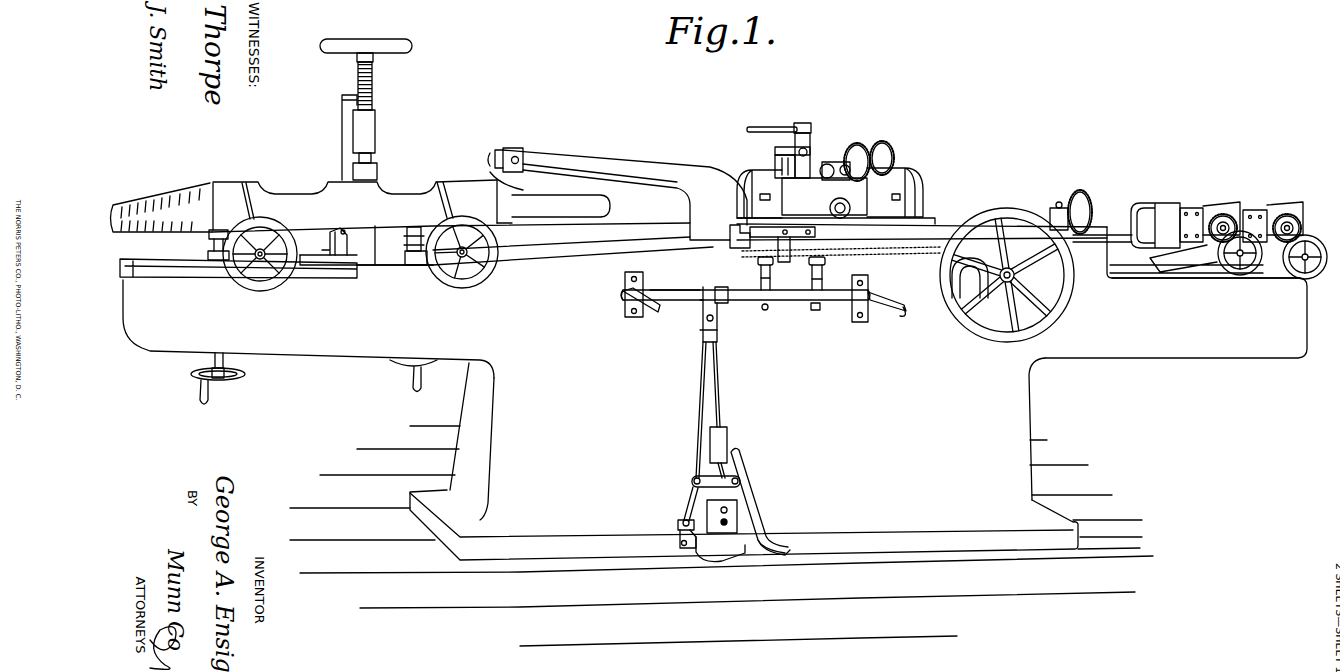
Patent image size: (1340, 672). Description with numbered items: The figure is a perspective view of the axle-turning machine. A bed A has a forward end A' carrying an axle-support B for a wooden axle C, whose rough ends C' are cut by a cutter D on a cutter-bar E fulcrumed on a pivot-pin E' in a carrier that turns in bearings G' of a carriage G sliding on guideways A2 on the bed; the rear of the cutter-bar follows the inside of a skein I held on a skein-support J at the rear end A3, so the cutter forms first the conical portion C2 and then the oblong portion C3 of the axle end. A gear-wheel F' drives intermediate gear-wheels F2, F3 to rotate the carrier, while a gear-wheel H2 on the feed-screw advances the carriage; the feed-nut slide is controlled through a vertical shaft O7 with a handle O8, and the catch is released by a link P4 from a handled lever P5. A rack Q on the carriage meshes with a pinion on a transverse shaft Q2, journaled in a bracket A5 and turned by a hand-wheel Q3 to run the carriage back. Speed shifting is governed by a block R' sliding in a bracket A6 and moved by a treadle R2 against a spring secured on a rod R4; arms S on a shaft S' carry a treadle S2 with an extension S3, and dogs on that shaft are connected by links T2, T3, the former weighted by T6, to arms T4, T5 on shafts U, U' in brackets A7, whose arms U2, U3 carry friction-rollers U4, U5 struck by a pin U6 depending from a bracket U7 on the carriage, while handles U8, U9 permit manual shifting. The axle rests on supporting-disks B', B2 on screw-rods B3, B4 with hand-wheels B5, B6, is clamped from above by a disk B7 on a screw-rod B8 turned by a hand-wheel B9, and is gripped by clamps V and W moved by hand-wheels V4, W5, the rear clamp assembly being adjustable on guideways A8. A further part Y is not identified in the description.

The bed A is at (798, 436).
The forward end of bed A' is at (615, 280).
The guideways A2 is at (730, 242).
The rear end of bed A3 is at (1206, 302).
The bracket A5 is at (952, 284).
The bracket A6 is at (678, 527).
The brackets A7 is at (625, 316).
The guideways A8 is at (190, 278).
The axle-support B is at (395, 278).
The supporting-disk B' is at (215, 233).
The supporting-disk B2 is at (414, 228).
The screw-rod B3 is at (225, 356).
The screw-rod B4 is at (418, 266).
The hand-wheel B5 is at (229, 381).
The hand-wheel B6 is at (398, 364).
The disk B7 is at (378, 168).
The screw-rod B8 is at (375, 84).
The hand-wheel B9 is at (374, 40).
The wooden axle C is at (355, 210).
The rough ends of axle C' is at (162, 204).
The conical portion C2 is at (611, 206).
The oblong portion C3 is at (512, 196).
The cutter D is at (495, 170).
The cutter-bar E is at (625, 190).
The pivot-pin E' is at (831, 205).
The gear-wheel F' is at (830, 196).
The intermediate gear-wheel F2 is at (856, 143).
The second intermediate gear-wheel F3 is at (886, 141).
The carriage G is at (840, 205).
The bearings G' is at (821, 180).
The gear-wheel H2 is at (1083, 192).
The skein I is at (1157, 207).
The skein-support J is at (1218, 227).
The shaft O7 is at (806, 124).
The handle O8 is at (777, 127).
The link P4 is at (775, 165).
The handled lever P5 is at (779, 149).
The rack Q is at (906, 257).
The transverse shaft Q2 is at (1004, 283).
The hand-wheel Q3 is at (1062, 302).
The block R' is at (744, 516).
The treadle R2 is at (730, 559).
The rod R4 is at (681, 545).
The arms S is at (671, 505).
The shaft S' is at (703, 476).
The treadle S2 is at (778, 553).
The extension S3 is at (745, 468).
The link T2 is at (718, 404).
The link T3 is at (700, 413).
The arm T4 is at (724, 305).
The arm T5 is at (696, 314).
The weight T6 is at (735, 450).
The shaft U is at (745, 310).
The shaft U' is at (675, 276).
The arm U2 is at (823, 285).
The arm U3 is at (760, 284).
The friction-roller U4 is at (826, 262).
The friction-roller U5 is at (757, 262).
The depending pin U6 is at (785, 267).
The bracket U7 is at (782, 240).
The handle U8 is at (652, 314).
The handle U9 is at (902, 315).
The clamp V is at (443, 182).
The hand-wheel V4 is at (485, 277).
The clamp W is at (246, 182).
The hand-wheel W5 is at (241, 288).
The tool holder Y is at (340, 228).